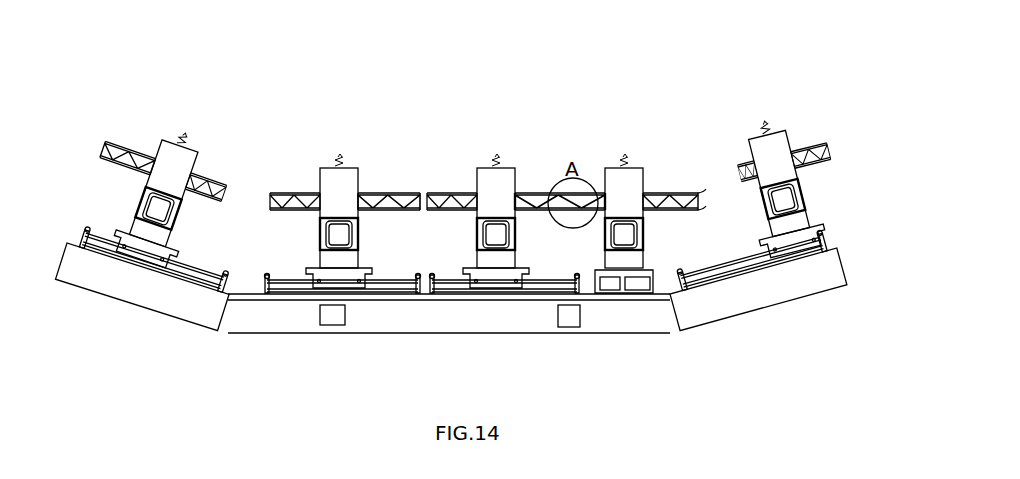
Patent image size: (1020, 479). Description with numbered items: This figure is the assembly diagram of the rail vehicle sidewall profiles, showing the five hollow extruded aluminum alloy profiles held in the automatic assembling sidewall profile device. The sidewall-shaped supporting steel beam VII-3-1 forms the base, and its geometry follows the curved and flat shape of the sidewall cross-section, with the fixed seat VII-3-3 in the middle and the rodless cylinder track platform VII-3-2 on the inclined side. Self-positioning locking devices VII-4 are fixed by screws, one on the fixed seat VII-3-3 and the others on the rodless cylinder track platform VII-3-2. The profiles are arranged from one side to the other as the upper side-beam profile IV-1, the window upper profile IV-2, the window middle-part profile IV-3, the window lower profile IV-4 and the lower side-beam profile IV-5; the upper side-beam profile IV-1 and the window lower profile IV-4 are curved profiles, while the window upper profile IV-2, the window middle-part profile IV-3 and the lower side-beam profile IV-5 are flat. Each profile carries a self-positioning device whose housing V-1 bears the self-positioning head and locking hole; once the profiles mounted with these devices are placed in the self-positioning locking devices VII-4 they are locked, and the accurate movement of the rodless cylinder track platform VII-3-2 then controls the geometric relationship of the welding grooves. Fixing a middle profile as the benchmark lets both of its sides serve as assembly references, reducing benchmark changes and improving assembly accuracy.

The housing V-1 is at (158, 154).
The upper side-beam profile IV-1 is at (150, 160).
The window upper profile IV-2 is at (300, 197).
The window middle-part profile IV-3 is at (452, 195).
The window lower profile IV-4 is at (675, 193).
The lower side-beam profile IV-5 is at (812, 143).
The self-positioning locking device VII-4 is at (793, 223).
The sidewall-shaped supporting steel beam VII-3-1 is at (138, 303).
The rodless cylinder track platform VII-3-2 is at (797, 252).
The fixed seat VII-3-3 is at (750, 363).